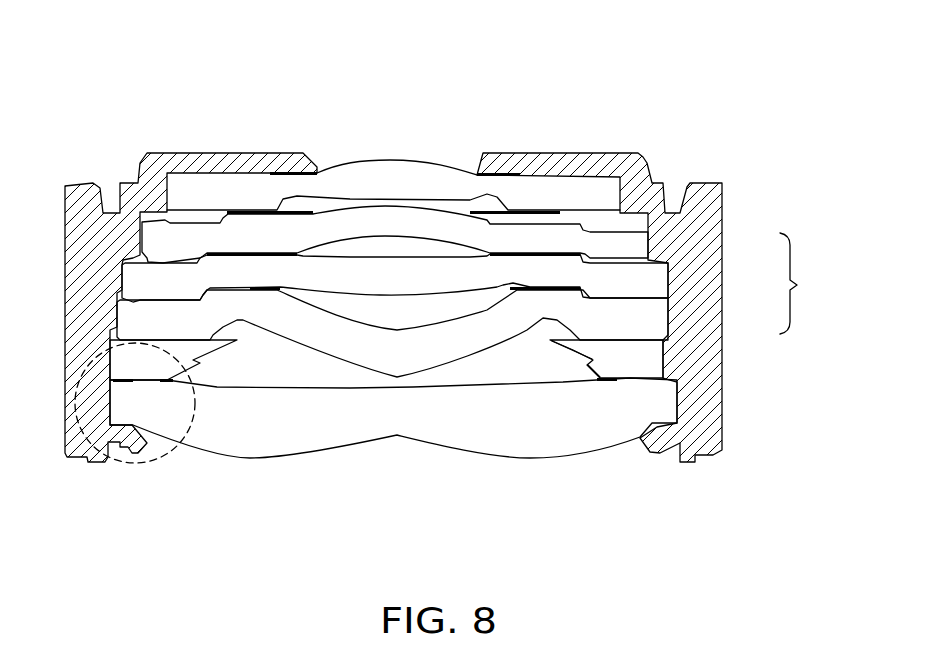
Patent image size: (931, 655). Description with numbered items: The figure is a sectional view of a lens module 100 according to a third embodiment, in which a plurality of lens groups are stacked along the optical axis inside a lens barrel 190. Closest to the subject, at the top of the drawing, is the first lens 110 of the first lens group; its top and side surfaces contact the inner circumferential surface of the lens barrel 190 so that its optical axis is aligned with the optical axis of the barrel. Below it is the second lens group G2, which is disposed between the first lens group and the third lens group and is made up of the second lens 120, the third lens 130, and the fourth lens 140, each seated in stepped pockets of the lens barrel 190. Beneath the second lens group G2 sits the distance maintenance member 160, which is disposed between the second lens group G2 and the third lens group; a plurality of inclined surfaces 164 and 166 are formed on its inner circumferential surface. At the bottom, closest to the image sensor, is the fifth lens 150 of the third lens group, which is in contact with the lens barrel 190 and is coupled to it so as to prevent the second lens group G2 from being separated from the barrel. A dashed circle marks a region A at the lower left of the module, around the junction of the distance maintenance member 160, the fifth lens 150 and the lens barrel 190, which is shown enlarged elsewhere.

The lens module 100 is at (465, 284).
The first lens 110 is at (607, 198).
The second lens 120 is at (635, 245).
The third lens 130 is at (658, 281).
The fourth lens 140 is at (660, 314).
The fifth lens 150 is at (667, 410).
The distance maintenance member 160 is at (447, 428).
The inclined surface 164 is at (573, 352).
The inclined surface 166 is at (603, 379).
The lens barrel 190 is at (695, 455).
The second lens group G2 is at (805, 283).
The enlarged region A is at (195, 445).